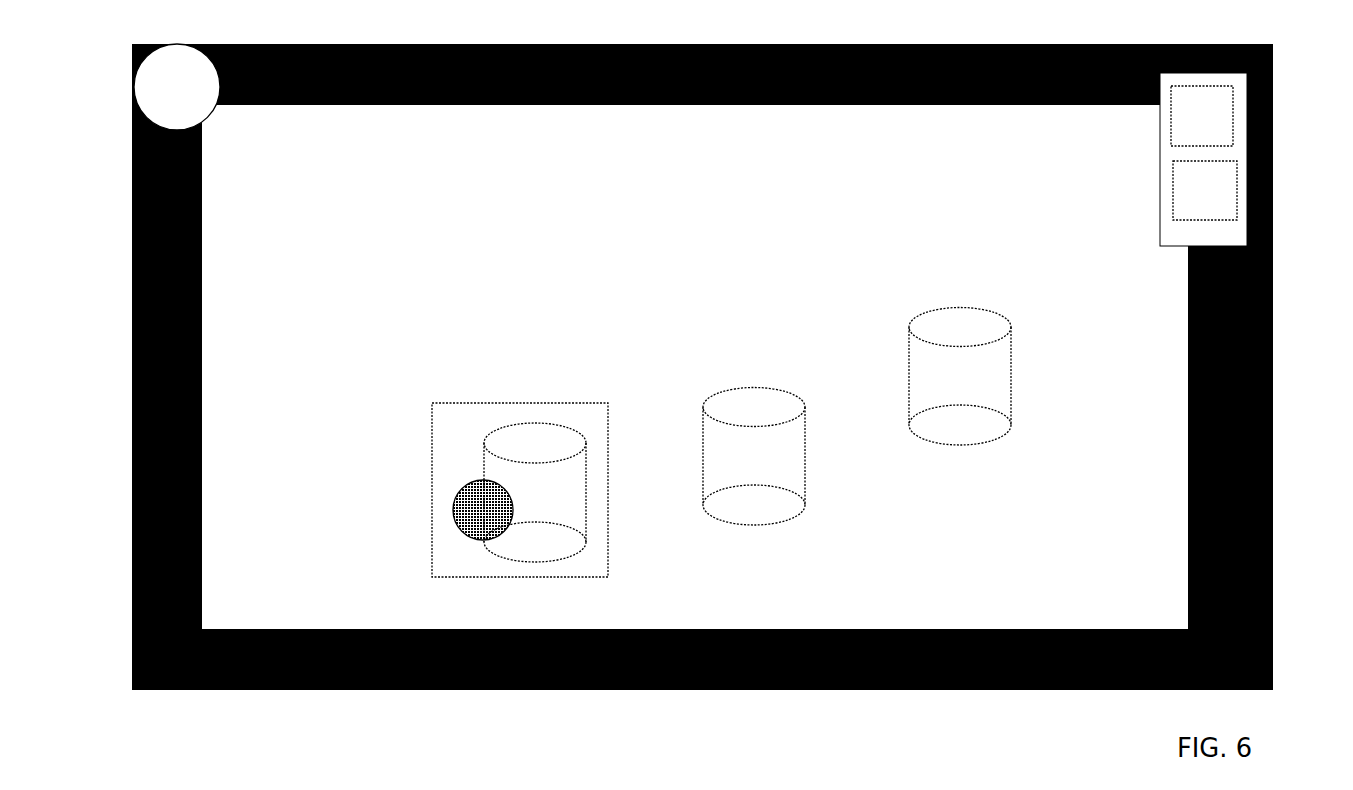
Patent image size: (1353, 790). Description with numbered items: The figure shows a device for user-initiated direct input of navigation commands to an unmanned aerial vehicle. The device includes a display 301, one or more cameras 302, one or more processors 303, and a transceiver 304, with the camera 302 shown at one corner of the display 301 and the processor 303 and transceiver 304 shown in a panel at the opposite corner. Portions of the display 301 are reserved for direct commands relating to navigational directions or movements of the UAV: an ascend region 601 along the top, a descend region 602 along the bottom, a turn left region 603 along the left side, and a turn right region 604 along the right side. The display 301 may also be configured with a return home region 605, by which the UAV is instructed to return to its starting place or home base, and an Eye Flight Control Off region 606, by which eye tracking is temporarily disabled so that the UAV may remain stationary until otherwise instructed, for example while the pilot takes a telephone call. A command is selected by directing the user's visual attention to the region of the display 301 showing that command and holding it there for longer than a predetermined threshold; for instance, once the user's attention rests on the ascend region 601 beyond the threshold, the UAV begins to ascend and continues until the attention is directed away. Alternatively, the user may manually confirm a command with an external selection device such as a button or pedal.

The display 301 is at (702, 384).
The camera 302 is at (177, 87).
The processor 303 is at (1202, 116).
The transceiver 304 is at (1205, 190).
The ascend region 601 is at (686, 52).
The descend region 602 is at (679, 680).
The turn left region 603 is at (126, 377).
The turn right region 604 is at (1271, 368).
The return home region 605 is at (1047, 56).
The Eye Flight Control Off region 606 is at (1095, 683).